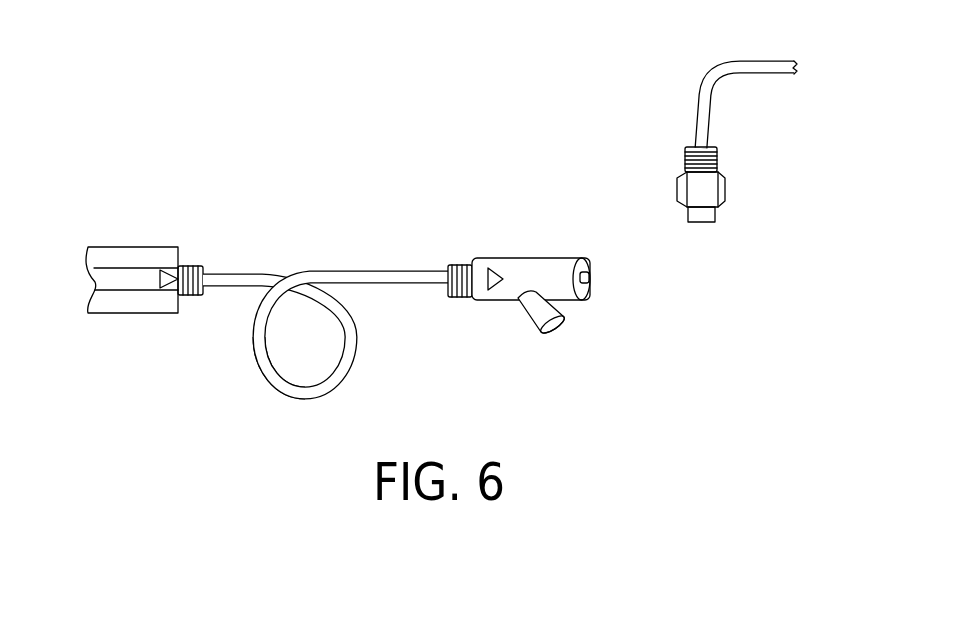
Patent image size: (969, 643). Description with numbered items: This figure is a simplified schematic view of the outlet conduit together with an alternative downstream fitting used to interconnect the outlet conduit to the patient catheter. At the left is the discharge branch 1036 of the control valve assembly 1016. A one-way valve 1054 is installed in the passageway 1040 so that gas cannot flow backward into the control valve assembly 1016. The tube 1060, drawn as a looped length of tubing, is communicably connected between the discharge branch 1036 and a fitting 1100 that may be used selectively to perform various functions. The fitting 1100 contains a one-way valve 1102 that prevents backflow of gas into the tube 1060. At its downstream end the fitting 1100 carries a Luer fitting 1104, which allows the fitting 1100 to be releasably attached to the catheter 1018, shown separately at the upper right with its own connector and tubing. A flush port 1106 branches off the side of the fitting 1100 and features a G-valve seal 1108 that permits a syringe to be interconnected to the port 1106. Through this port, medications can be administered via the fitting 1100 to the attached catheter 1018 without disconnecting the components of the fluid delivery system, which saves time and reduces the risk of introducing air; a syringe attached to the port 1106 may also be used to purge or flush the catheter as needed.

The control valve assembly 1016 is at (102, 247).
The passageway 1040 is at (135, 293).
The one-way valve 1054 is at (156, 270).
The discharge branch 1036 is at (163, 247).
The tube 1060 is at (404, 285).
The fitting 1100 is at (555, 258).
The one-way valve 1102 is at (503, 268).
The Luer fitting 1104 is at (590, 278).
The flush port 1106 is at (527, 317).
The G-valve seal 1108 is at (563, 328).
The catheter 1018 is at (693, 108).